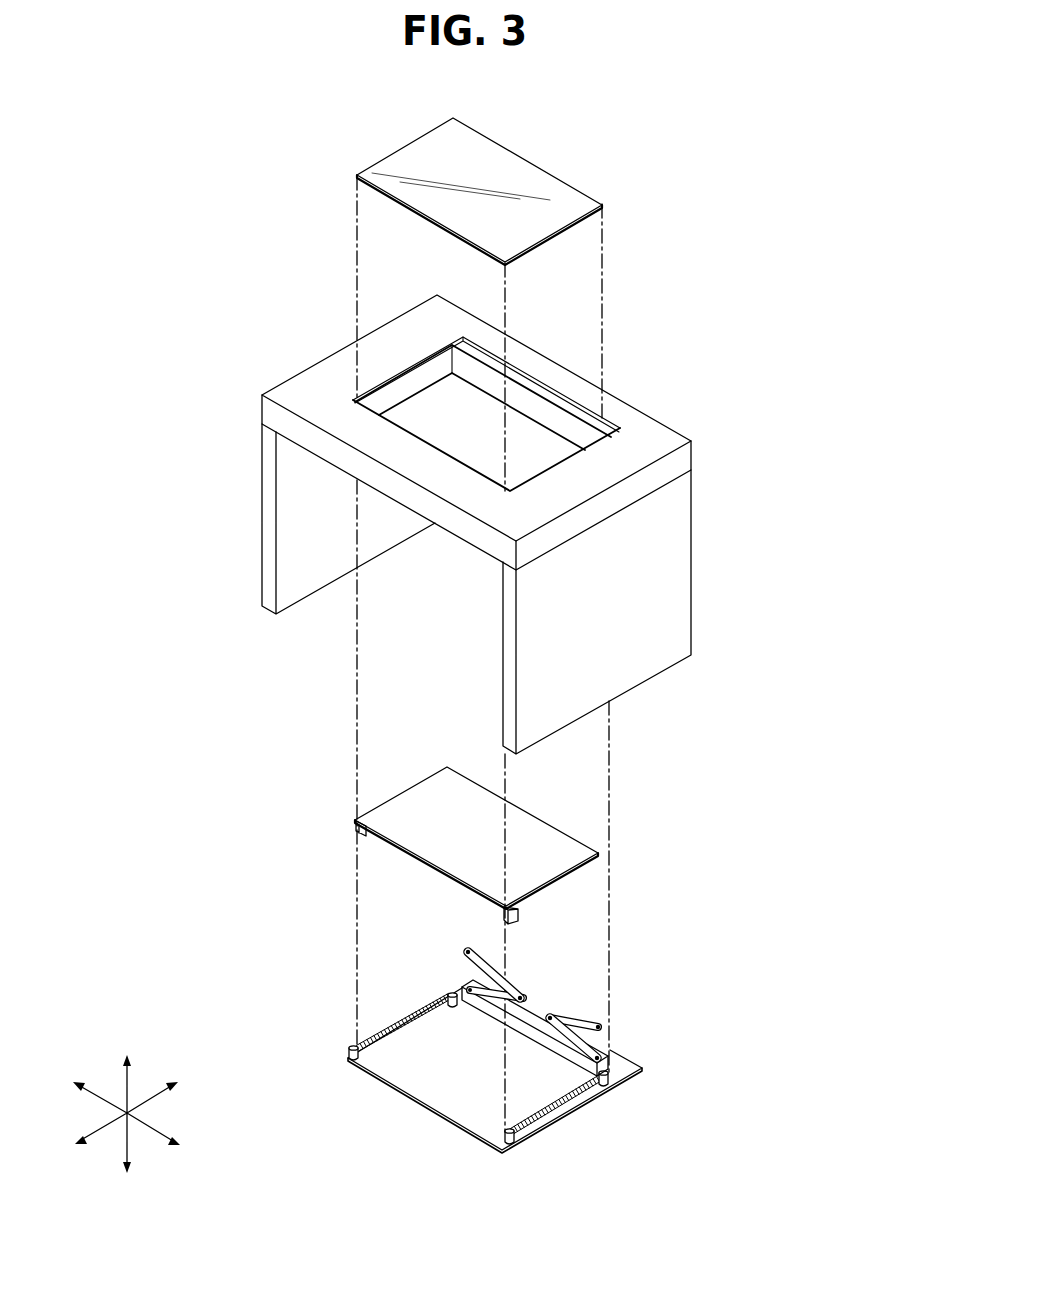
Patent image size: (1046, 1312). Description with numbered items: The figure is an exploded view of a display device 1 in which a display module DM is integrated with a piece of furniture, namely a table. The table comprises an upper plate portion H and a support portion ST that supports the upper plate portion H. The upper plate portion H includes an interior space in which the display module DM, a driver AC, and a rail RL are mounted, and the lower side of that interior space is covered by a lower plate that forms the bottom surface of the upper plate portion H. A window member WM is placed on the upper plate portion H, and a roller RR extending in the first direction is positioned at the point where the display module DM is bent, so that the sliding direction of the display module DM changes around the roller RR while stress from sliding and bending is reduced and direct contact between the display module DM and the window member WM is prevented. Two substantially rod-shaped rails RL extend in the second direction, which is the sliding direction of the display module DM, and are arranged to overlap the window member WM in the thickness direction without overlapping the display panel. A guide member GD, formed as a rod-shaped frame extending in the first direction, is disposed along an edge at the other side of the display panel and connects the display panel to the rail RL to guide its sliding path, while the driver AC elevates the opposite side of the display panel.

The display device 1 is at (178, 140).
The window member WM is at (538, 180).
The upper plate portion H is at (680, 457).
The roller RR is at (583, 422).
The support portion ST is at (268, 500).
The display module DM is at (400, 805).
The guide member GD is at (357, 822).
The rail RL is at (408, 1016).
The driver AC is at (578, 1022).